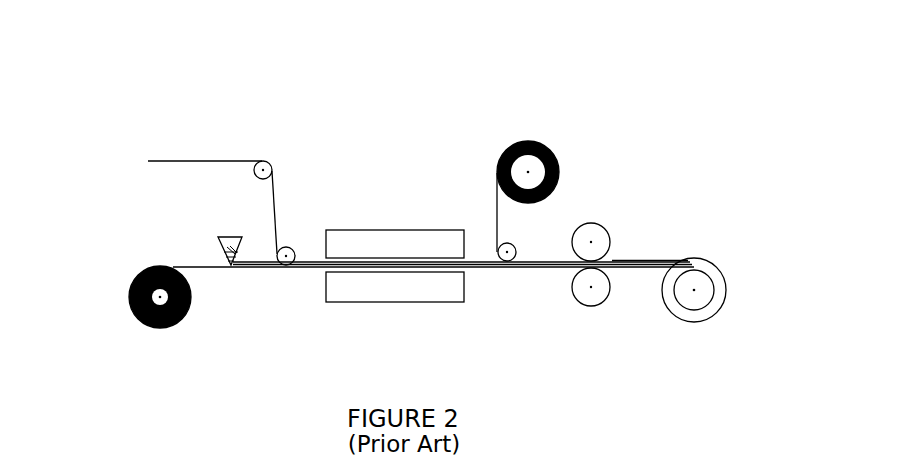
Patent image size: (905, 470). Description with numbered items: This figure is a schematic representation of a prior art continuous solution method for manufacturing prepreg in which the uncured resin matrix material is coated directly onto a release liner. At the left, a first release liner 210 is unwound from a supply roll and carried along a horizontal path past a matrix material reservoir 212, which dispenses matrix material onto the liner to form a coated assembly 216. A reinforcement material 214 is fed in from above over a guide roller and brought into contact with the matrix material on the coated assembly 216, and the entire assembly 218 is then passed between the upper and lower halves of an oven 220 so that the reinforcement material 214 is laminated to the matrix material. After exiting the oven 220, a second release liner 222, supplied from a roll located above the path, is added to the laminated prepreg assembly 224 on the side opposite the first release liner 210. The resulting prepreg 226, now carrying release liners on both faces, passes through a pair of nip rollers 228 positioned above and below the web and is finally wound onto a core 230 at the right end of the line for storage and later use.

The first release liner 210 is at (188, 267).
The matrix material reservoir 212 is at (231, 265).
The reinforcement material 214 is at (218, 160).
The coated assembly 216 is at (253, 268).
The entire assembly 218 is at (300, 258).
The oven 220 is at (393, 238).
The second release liner 222 is at (496, 220).
The laminated prepreg assembly 224 is at (482, 267).
The prepreg 226 is at (652, 258).
The nip / laminating rollers 228 is at (600, 233).
The core 230 is at (694, 290).